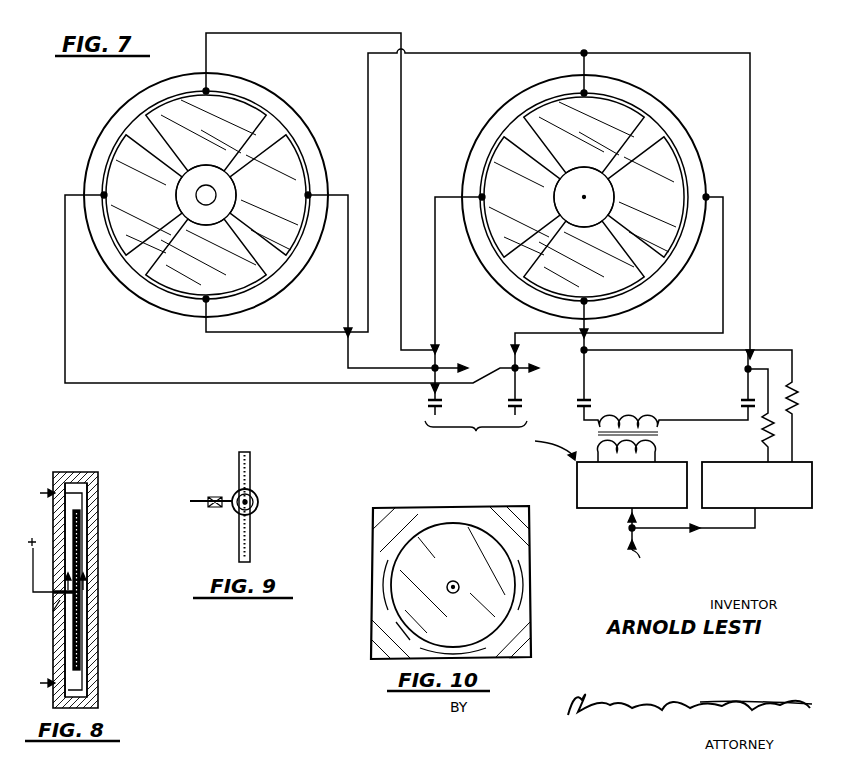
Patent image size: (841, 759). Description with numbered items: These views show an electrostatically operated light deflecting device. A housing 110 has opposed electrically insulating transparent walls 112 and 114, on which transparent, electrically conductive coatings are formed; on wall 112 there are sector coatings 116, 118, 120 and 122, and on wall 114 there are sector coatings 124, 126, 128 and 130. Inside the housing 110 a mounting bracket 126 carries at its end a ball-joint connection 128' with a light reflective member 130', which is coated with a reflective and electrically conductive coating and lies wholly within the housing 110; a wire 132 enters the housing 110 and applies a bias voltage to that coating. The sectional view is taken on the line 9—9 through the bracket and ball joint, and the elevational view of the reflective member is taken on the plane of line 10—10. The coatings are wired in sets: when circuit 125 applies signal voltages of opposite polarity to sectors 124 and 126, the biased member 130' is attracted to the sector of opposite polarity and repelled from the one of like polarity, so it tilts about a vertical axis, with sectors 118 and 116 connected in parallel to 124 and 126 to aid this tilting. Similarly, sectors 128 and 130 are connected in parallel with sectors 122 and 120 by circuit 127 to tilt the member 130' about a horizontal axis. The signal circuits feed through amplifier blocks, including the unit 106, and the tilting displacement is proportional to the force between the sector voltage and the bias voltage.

In FIG. 7, the amplifier 106 is at (666, 462).
In FIG. 8, the housing 110 is at (78, 472).
In FIG. 7, the transparent wall 112 is at (312, 166).
In FIG. 8, the transparent wall 112 is at (57, 641).
In FIG. 10, the transparent wall 112 is at (391, 513).
In FIG. 7, the transparent wall 114 is at (670, 240).
In FIG. 8, the transparent wall 114 is at (98, 520).
In FIG. 7, the transparent conductive coating 116 is at (219, 122).
In FIG. 10, the transparent conductive coating 116 is at (464, 514).
In FIG. 7, the transparent conductive coating 118 is at (217, 272).
In FIG. 10, the transparent conductive coating 118 is at (382, 656).
In FIG. 7, the transparent conductive coating 120 is at (285, 207).
In FIG. 10, the transparent conductive coating 120 is at (531, 568).
In FIG. 7, the transparent conductive coating 122 is at (123, 207).
In FIG. 10, the transparent conductive coating 122 is at (376, 596).
In FIG. 7, the conductive coating 124 is at (600, 123).
In FIG. 7, the circuit 125 is at (367, 64).
In FIG. 7, the conductive coating 126 is at (563, 273).
In FIG. 8, the conductive coating 126 is at (60, 600).
In FIG. 9, the conductive coating 126 is at (215, 508).
In FIG. 7, the circuit 127 is at (318, 357).
In FIG. 7, the conductive coating 128 is at (674, 197).
In FIG. 10, the conductive coating 128 is at (453, 585).
In FIG. 9, the ball-joint connection 128' is at (266, 490).
In FIG. 7, the conductive coating 130 is at (501, 208).
In FIG. 8, the light reflective member 130' is at (104, 591).
In FIG. 9, the light reflective member 130' is at (268, 499).
In FIG. 10, the light reflective member 130' is at (372, 628).
In FIG. 8, the wire 132 is at (47, 556).
In FIG. 9, the wire 132 is at (197, 500).
In FIG. 8, the line 10— 10 is at (37, 590).
In FIG. 8, the line 9— 9 is at (75, 573).